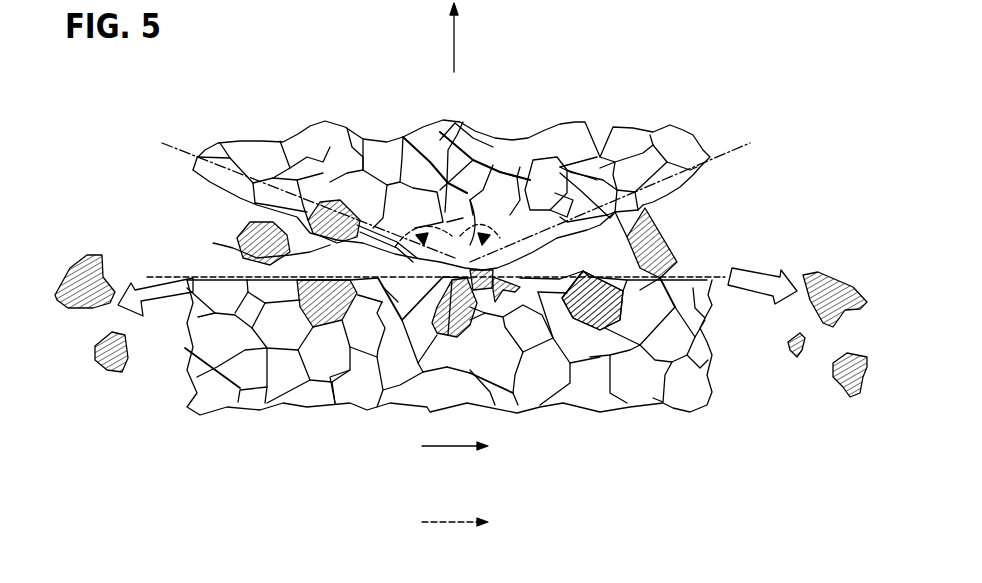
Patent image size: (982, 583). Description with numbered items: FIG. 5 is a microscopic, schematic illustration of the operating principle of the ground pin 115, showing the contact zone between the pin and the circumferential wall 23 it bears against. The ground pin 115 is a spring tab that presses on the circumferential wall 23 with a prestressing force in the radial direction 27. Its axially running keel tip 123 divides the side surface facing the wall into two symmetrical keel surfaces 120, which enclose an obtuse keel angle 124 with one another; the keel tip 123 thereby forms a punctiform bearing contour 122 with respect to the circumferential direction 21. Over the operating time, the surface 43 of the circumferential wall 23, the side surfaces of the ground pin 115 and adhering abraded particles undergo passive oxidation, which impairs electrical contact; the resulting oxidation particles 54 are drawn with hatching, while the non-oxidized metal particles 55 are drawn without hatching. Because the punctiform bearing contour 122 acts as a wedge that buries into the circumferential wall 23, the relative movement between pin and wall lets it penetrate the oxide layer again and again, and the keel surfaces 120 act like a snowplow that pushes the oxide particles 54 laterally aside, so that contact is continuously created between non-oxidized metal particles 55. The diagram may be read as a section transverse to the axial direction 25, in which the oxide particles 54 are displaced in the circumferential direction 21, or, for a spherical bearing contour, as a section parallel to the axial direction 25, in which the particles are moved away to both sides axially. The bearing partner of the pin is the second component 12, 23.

The second component / joining partner 12 is at (578, 338).
The circumferential wall 23 is at (593, 373).
The circumferential direction 21 is at (445, 448).
The axial direction 25 is at (445, 525).
The radial direction 27 is at (454, 44).
The surface of the circumferential surface 43 is at (223, 278).
The oxidation particles 54 is at (667, 237).
The non-oxidized metal particles 55 is at (240, 225).
The ground pin 115 is at (490, 193).
The keel surfaces 120 is at (178, 152).
The punctiform bearing contour 122 is at (427, 347).
The keel tip 123 is at (408, 372).
The keel angle 124 is at (392, 137).